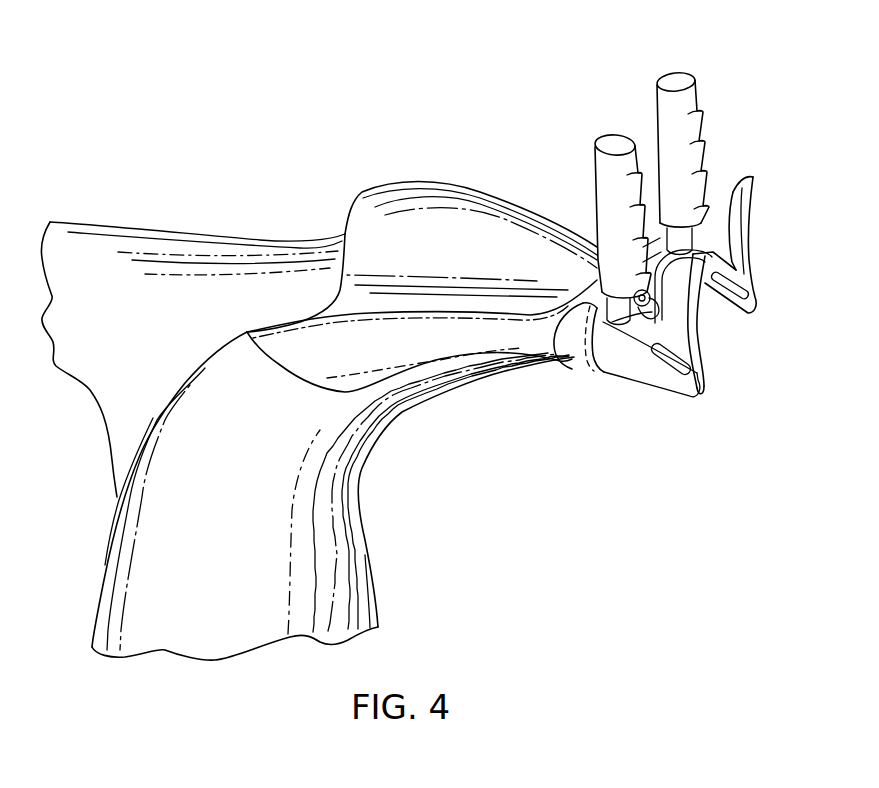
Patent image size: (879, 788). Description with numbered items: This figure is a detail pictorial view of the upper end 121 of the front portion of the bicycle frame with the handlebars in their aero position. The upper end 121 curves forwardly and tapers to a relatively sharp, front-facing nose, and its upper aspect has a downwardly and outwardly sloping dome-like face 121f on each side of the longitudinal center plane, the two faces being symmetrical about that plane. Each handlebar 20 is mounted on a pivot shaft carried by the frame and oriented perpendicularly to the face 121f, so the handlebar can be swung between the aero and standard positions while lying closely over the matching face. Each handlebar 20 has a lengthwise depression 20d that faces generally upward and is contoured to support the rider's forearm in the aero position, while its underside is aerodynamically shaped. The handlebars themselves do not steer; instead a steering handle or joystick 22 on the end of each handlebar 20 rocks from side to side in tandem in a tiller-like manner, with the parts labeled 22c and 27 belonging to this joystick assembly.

The handlebar 20 is at (373, 228).
The lengthwise depression 20d is at (470, 247).
The steering handle (joystick) 22 is at (667, 78).
The collar 22c is at (583, 357).
The pivot levers 27 is at (740, 232).
The upper end of the front portion of the frame 121 is at (385, 402).
The dome-like face 121f is at (472, 373).